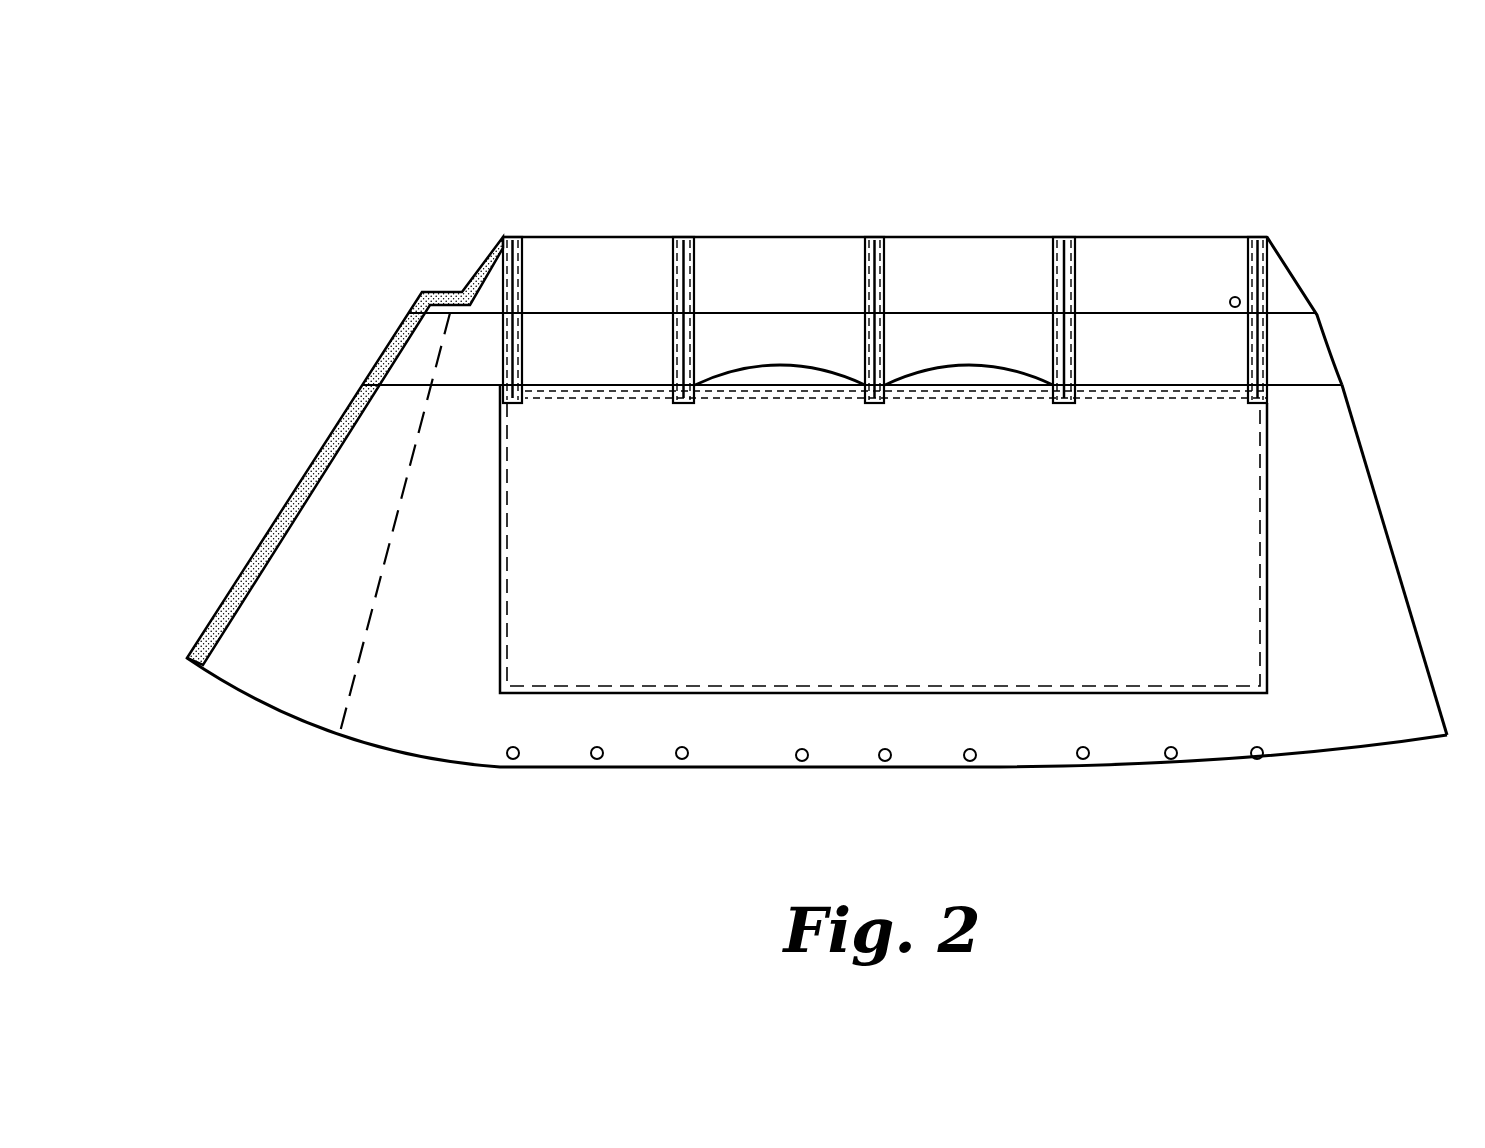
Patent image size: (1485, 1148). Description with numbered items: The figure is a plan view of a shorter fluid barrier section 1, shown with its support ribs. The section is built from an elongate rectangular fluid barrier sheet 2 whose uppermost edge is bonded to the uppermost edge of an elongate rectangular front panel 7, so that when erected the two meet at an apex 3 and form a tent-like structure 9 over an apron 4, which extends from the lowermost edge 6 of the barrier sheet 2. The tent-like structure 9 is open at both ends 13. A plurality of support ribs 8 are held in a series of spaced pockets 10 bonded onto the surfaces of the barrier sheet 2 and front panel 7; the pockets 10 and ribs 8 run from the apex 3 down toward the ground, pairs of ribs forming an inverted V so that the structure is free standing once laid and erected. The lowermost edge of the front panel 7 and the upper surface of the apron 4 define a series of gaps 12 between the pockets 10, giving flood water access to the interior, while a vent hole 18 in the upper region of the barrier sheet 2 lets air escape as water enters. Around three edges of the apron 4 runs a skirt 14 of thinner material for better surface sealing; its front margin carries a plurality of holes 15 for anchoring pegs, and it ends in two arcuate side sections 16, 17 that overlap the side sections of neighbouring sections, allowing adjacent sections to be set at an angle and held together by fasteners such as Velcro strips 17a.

The fluid barrier section 1 is at (1318, 171).
The fluid barrier sheet 2 is at (586, 290).
The apex 3 is at (561, 313).
The apron 4 is at (875, 551).
The lowermost edge 6 is at (637, 237).
The front panel 7 is at (586, 370).
The support ribs 8 is at (700, 258).
The tent-like structure 9 is at (520, 228).
The pockets 10 is at (885, 280).
The gaps 12 is at (778, 380).
The ends 13 is at (382, 313).
The skirt 14 is at (1338, 762).
The holes 15 is at (518, 757).
The arcuate side section 16 is at (1318, 543).
The arcuate side section 17 is at (325, 535).
The Velcro strips 17a is at (253, 570).
The vent hole 18 is at (1240, 298).